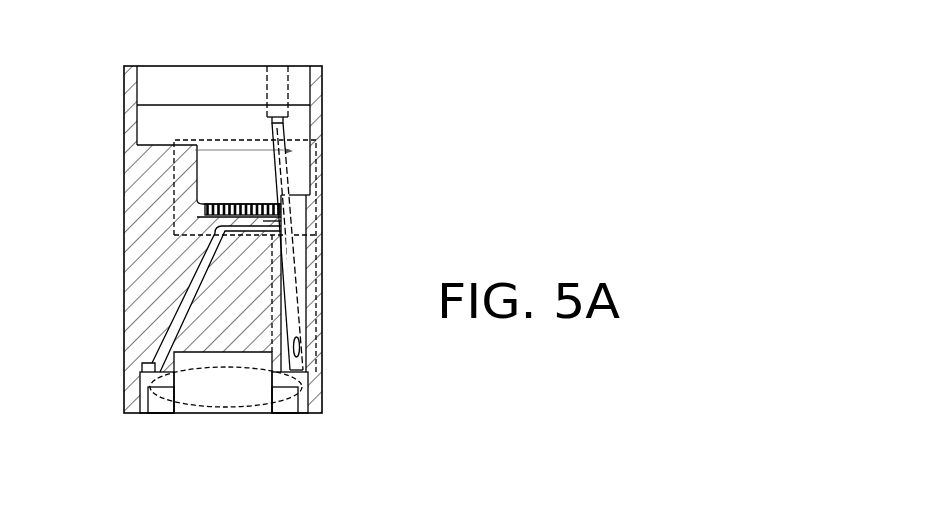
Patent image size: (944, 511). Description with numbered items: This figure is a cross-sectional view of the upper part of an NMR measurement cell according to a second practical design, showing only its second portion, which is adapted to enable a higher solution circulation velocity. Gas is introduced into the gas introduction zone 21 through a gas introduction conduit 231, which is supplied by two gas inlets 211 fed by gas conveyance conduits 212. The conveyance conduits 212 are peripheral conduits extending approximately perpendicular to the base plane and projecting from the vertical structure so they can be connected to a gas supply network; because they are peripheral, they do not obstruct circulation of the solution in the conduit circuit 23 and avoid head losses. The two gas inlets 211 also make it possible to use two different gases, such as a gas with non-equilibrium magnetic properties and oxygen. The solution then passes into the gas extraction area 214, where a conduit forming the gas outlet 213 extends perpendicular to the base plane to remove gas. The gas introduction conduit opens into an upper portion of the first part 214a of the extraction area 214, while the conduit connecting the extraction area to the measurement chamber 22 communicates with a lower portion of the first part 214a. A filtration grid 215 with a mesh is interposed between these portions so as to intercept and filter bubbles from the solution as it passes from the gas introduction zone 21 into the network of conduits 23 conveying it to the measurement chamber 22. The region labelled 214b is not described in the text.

The gas introduction zone 21 is at (320, 168).
The gas outlet 213 is at (246, 112).
The gas extraction area 214 is at (290, 175).
The first part of the extraction area 214a is at (283, 218).
The side chamber 214b is at (218, 180).
The filtration grid 215 is at (200, 210).
The network of conduits 23 is at (182, 312).
The gas introduction conduit 231 is at (298, 260).
The gas conveyance conduit 212 is at (293, 290).
The gas inlet 211 is at (298, 348).
The measurement chamber 22 is at (205, 405).